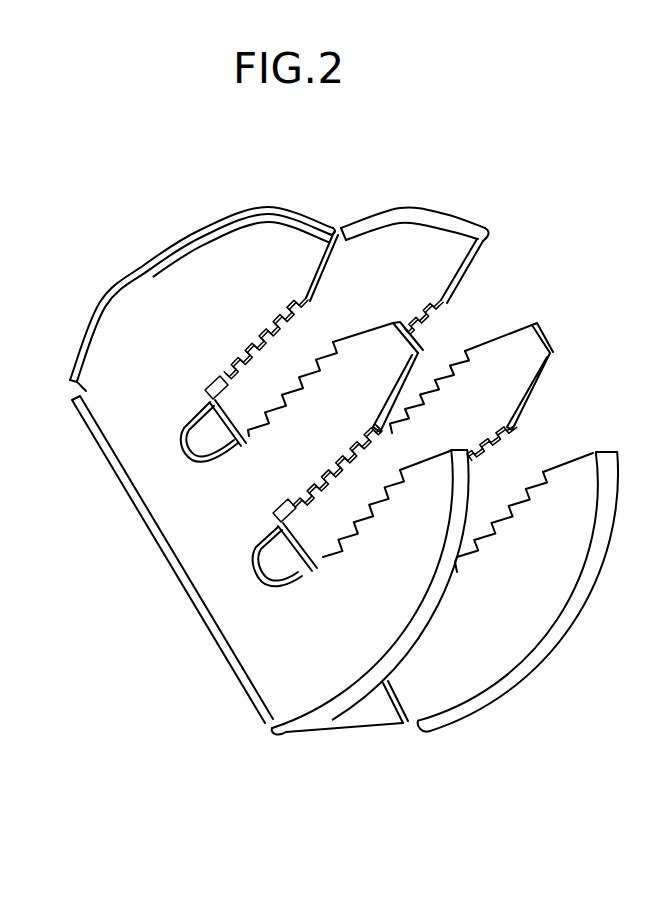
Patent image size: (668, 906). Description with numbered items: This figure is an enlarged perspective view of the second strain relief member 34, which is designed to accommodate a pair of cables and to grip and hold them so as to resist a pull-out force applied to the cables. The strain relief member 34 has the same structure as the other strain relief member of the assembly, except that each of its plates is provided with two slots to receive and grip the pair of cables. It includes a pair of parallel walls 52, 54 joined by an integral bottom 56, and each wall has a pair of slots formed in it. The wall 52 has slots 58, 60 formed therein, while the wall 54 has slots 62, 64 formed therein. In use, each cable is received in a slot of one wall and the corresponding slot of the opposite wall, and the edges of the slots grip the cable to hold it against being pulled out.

The second strain relief member 34 is at (478, 210).
The wall 52 is at (410, 214).
The wall 54 is at (232, 224).
The integral bottom 56 is at (366, 723).
The slot 58 is at (479, 292).
The slot 60 is at (566, 416).
The slot 62 is at (329, 311).
The slot 64 is at (405, 443).